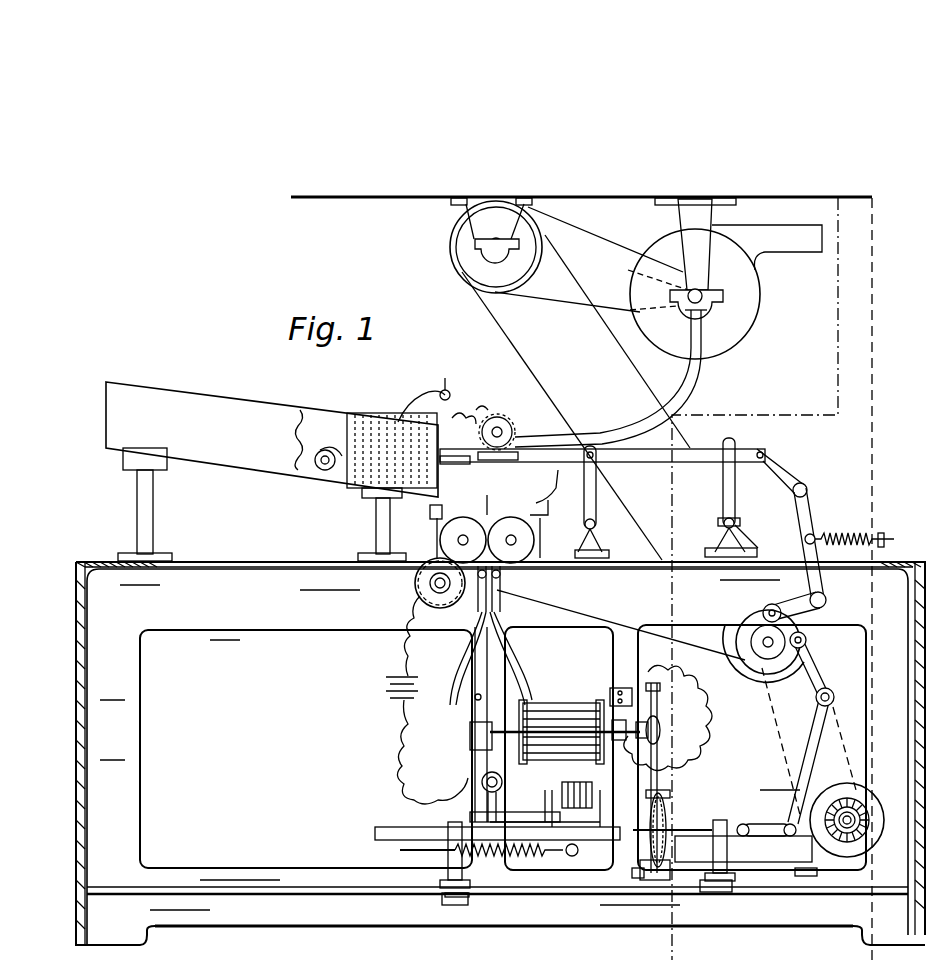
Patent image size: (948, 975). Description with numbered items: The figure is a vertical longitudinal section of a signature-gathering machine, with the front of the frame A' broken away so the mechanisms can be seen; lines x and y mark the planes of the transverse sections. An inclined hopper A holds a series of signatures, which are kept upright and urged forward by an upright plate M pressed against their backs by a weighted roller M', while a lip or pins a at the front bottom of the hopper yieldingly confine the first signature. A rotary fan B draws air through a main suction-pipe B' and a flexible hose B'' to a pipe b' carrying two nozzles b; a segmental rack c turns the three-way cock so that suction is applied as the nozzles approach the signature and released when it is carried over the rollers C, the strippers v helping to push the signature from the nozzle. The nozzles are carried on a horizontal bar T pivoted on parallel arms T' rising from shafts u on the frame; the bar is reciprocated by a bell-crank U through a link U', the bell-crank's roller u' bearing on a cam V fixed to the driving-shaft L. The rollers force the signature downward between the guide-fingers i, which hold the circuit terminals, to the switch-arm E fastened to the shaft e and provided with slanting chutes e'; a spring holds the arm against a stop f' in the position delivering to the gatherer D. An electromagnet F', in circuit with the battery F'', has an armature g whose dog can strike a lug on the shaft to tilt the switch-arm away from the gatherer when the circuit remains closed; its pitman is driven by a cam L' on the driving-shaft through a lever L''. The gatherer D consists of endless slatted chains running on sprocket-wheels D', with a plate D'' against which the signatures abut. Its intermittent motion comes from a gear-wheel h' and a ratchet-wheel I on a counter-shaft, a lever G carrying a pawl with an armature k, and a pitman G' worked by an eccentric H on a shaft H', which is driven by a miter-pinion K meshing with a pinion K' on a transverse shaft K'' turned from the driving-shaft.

The hopper A is at (272, 471).
The frame A' is at (500, 753).
The upright plate M is at (395, 431).
The weighted roller M' is at (321, 449).
The rotary fan B is at (725, 278).
The main suction-pipe B' is at (685, 295).
The hose B'' is at (611, 378).
The horizontal bar T is at (602, 467).
The parallel arm T' is at (593, 502).
The link T'' is at (724, 497).
The shaft u is at (676, 526).
The link U' is at (782, 469).
The bell-crank U is at (844, 546).
The roller u' is at (788, 601).
The cam L' is at (781, 646).
The driving-shaft L is at (805, 728).
The lever L'' is at (809, 741).
The cam V is at (712, 636).
The miter-pinion K is at (847, 811).
The pinion K' is at (869, 794).
The transverse shaft K'' is at (872, 834).
The eccentric H is at (744, 832).
The shaft H' is at (766, 813).
The lever G is at (672, 781).
The reciprocating pitman G' is at (668, 825).
The ratchet-wheel I is at (680, 742).
The armature k is at (665, 732).
The gear-wheel h' is at (614, 758).
The gatherer D is at (565, 722).
The sprocket-wheel D' is at (564, 742).
The plate D'' is at (611, 686).
The switch-arm E is at (470, 752).
The shaft e is at (477, 791).
The slanting chute e' is at (492, 658).
The guide-finger i is at (478, 606).
The stop f' is at (453, 709).
The battery F'' is at (470, 713).
The electromagnet F' is at (497, 850).
The armature g is at (545, 803).
The roller C is at (494, 516).
The segmental rack c is at (539, 495).
The stripper v is at (488, 495).
The lip or pins a is at (455, 446).
The nozzle b is at (496, 319).
The pipe b' is at (485, 446).
The line X X x is at (750, 578).
The line Y Y y is at (867, 572).